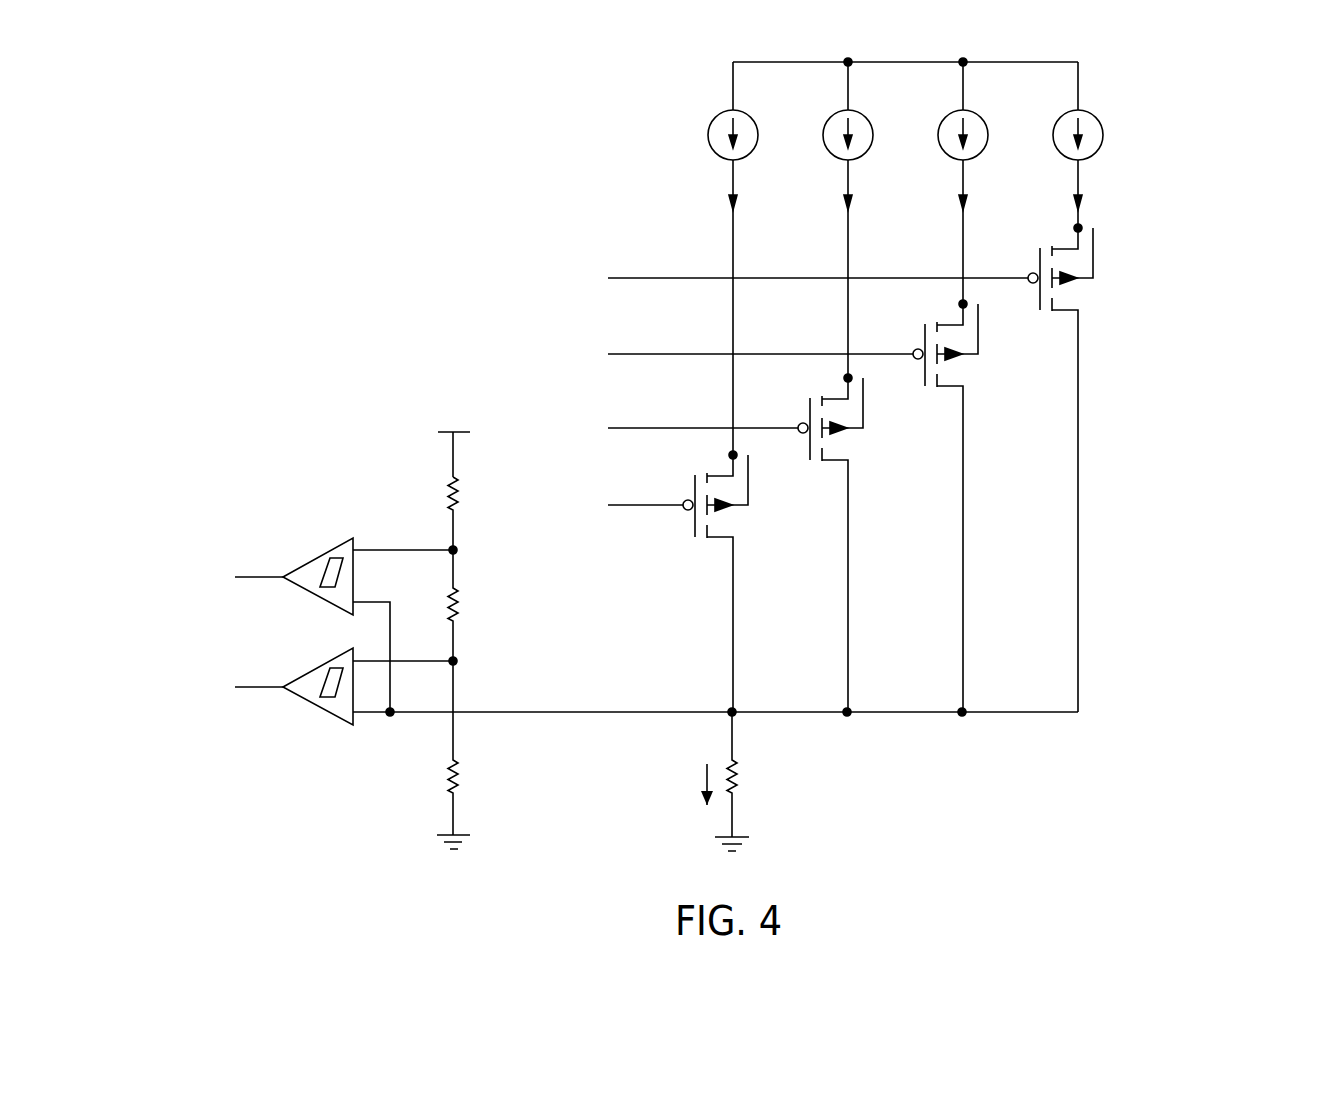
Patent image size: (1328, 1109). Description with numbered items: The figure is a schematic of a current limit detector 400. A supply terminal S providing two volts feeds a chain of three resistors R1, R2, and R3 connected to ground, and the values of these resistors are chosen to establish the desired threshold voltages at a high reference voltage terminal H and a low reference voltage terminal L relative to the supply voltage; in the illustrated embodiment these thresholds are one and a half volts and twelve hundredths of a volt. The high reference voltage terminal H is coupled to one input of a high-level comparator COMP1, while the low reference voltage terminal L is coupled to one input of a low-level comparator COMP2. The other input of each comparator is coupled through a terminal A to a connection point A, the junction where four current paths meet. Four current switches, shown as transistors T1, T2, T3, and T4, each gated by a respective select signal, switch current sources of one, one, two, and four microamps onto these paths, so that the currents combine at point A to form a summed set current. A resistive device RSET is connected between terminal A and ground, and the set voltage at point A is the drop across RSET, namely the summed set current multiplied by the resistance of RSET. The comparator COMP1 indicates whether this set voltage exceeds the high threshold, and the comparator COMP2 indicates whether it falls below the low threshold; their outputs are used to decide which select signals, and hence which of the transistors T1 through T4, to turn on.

The current limit detector 400 is at (405, 237).
The transistor T1 is at (677, 581).
The transistor T2 is at (734, 543).
The transistor T3 is at (792, 506).
The transistor T4 is at (849, 468).
The resistor R1 is at (472, 513).
The resistor R2 is at (472, 605).
The resistor R3 is at (467, 755).
The resistive device RSET is at (763, 781).
The high-level comparator COMP1 is at (335, 550).
The low-level comparator COMP2 is at (335, 660).
The supply terminal S is at (427, 423).
The high reference voltage terminal H is at (447, 546).
The low reference voltage terminal L is at (447, 658).
The terminal A is at (724, 708).